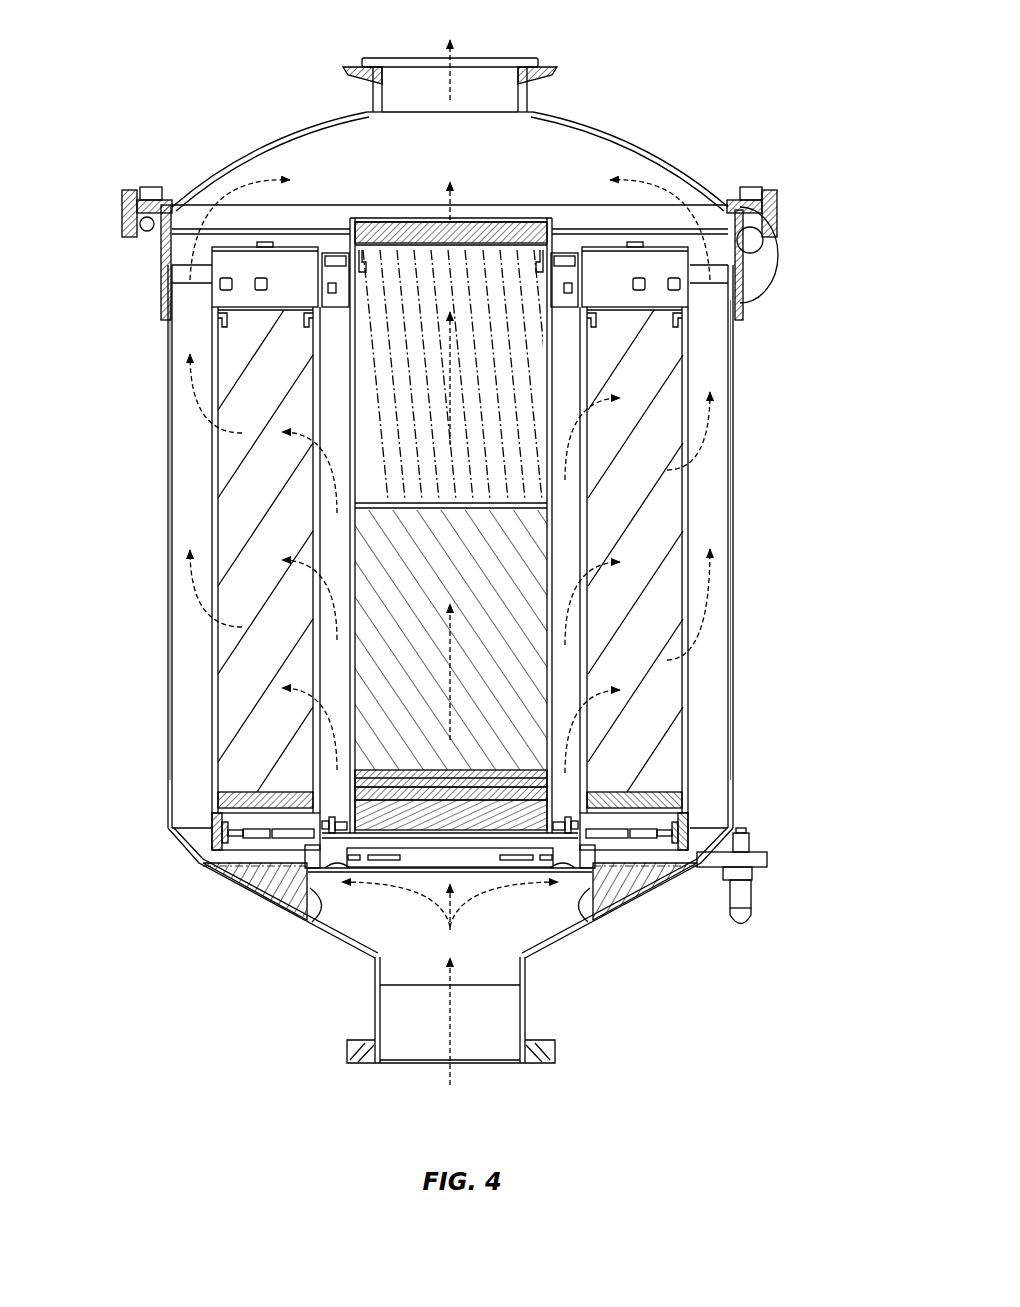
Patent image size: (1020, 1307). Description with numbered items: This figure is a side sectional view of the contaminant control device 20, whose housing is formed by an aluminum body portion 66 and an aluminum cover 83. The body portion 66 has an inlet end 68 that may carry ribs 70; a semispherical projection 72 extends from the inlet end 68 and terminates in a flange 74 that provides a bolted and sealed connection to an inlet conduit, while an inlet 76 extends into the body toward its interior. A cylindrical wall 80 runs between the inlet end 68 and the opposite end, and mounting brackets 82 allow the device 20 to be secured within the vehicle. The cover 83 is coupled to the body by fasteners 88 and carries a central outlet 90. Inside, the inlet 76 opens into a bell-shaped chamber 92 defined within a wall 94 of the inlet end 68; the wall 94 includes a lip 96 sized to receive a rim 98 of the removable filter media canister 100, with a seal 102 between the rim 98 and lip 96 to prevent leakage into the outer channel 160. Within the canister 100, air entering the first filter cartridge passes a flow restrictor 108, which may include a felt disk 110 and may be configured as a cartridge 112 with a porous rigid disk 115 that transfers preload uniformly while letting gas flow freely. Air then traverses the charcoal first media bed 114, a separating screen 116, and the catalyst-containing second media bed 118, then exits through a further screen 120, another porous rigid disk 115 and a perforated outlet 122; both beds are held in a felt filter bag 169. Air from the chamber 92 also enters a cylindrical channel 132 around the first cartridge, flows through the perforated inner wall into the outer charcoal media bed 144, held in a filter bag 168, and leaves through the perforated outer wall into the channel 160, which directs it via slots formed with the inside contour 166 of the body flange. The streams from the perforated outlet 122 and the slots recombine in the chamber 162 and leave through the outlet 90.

The contaminant control device 20 is at (740, 76).
The body portion 66 is at (733, 727).
The inlet end 68 is at (217, 872).
The ribs 70 is at (733, 923).
The semispherical projection 72 is at (540, 957).
The flange 74 is at (555, 1048).
The inlet 76 is at (432, 1045).
The cylindrical wall 80 is at (733, 353).
The mounting brackets 82 is at (788, 252).
The cover 83 is at (576, 122).
The fasteners 88 is at (128, 190).
The outlet 90 is at (490, 75).
The bell-shaped chamber 92 is at (484, 934).
The wall 94 is at (327, 918).
The lip 96 is at (268, 897).
The rim 98 is at (607, 898).
The filter media canister 100 is at (211, 845).
The seal 102 is at (622, 895).
The flow restrictor 108 is at (433, 824).
The felt disk 110 is at (537, 769).
The cartridge 112 is at (457, 769).
The first media bed 114 is at (382, 689).
The porous rigid disk 115 is at (385, 226).
The screen 116 is at (443, 510).
The second media bed 118 is at (384, 456).
The screen 120 is at (505, 240).
The perforated outlet 122 is at (472, 222).
The cylindrical channel 132 is at (340, 390).
The media bed 144 is at (239, 764).
The channel 160 is at (717, 470).
The chamber 162 is at (318, 164).
The inside contour 166 is at (737, 282).
The filter bag 168 is at (217, 527).
The filter bag 169 is at (447, 258).